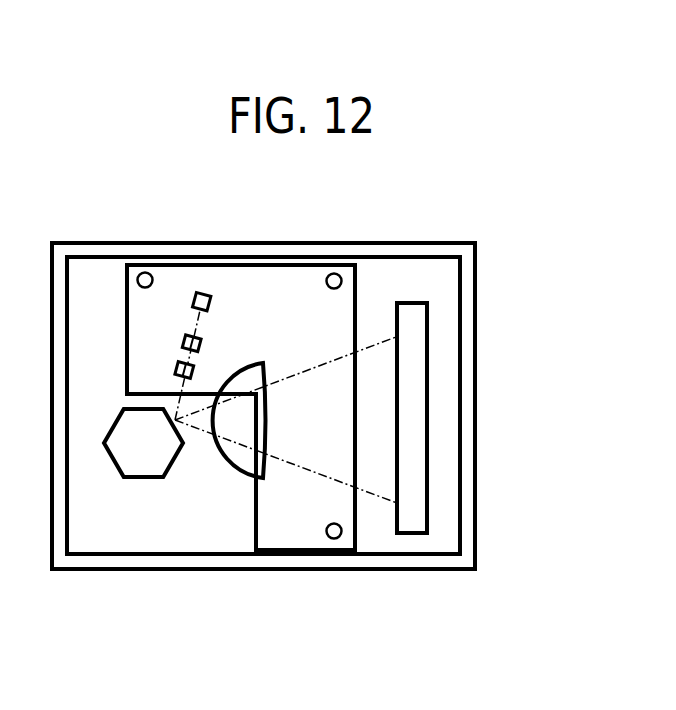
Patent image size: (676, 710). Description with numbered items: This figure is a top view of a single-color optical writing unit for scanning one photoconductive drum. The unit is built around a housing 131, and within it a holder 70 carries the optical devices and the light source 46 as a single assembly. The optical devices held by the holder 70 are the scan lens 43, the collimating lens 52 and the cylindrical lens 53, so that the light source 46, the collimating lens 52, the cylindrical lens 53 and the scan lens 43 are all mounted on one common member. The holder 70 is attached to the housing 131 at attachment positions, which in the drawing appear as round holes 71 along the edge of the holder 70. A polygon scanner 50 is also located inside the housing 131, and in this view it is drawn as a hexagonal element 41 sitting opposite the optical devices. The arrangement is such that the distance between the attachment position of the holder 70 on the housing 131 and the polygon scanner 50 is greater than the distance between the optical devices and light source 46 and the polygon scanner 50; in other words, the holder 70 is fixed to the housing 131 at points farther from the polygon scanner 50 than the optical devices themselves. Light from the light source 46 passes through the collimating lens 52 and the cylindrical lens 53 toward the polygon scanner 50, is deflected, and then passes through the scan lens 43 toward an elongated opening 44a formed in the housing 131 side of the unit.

The housing 131 is at (475, 397).
The holder 70 is at (281, 265).
The screw hole 71 is at (145, 272).
The window / exit opening 44a is at (427, 455).
The scan lens 43 is at (281, 364).
The polygon scanner 50 is at (155, 488).
The polygon mirror 41 is at (112, 462).
The light source 46 is at (208, 302).
The collimating lens 52 is at (199, 343).
The cylindrical lens 53 is at (192, 370).